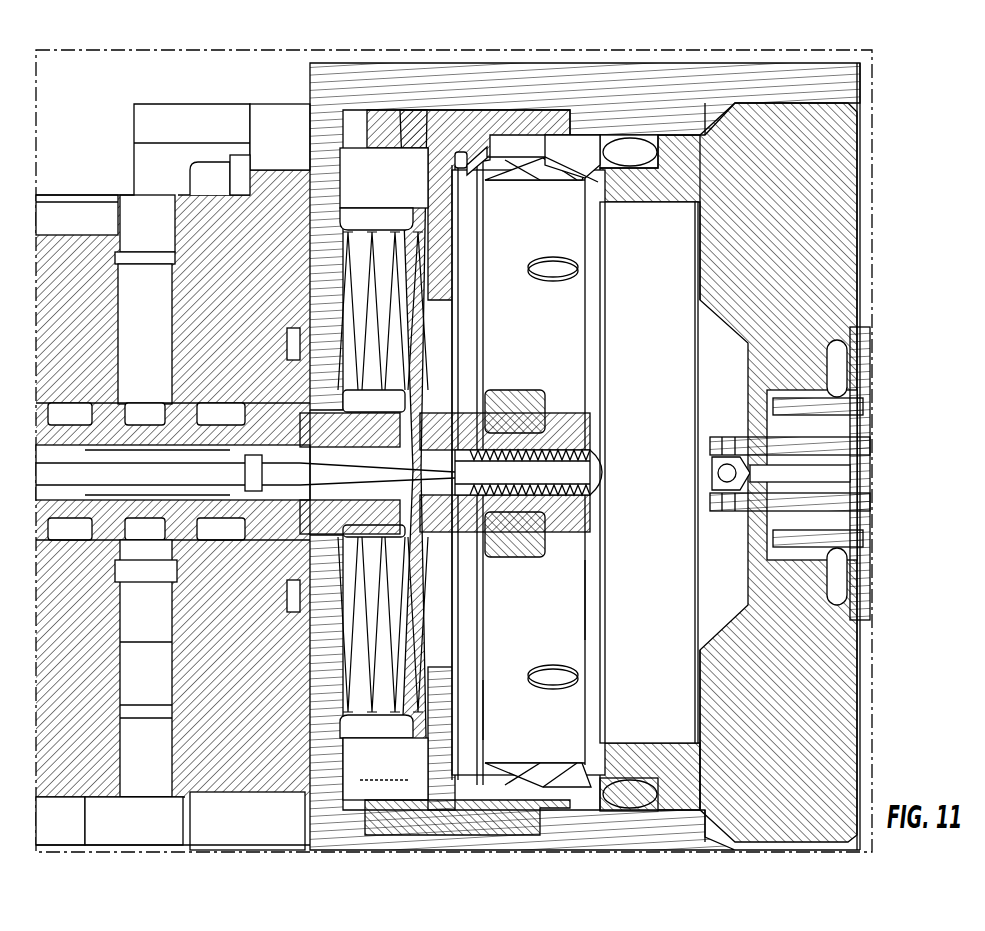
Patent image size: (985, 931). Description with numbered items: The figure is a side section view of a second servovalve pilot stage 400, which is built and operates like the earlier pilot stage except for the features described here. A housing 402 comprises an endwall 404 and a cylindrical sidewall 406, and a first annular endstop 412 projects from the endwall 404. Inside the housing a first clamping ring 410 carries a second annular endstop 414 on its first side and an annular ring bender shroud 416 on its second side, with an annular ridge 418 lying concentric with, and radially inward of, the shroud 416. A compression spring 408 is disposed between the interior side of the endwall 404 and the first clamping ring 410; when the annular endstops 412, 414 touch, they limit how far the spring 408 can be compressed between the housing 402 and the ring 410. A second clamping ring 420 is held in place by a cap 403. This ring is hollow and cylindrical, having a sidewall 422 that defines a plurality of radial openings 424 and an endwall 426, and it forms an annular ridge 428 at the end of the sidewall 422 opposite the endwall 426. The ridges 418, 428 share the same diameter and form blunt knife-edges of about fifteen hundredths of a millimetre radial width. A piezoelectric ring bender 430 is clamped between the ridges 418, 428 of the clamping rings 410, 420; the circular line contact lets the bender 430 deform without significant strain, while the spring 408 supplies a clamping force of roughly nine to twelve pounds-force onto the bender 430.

The second servovalve pilot stage 400 is at (890, 124).
The housing 402 is at (323, 70).
The cap 403 is at (763, 229).
The endwall 404 is at (313, 278).
The cylindrical sidewall 406 is at (640, 114).
The compression spring 408 is at (371, 222).
The first clamping ring 410 is at (437, 758).
The first annular endstop 412 is at (348, 218).
The second annular endstop 414 is at (420, 215).
The annular ring bender shroud 416 is at (470, 168).
The annular ridge 418 is at (462, 160).
The second clamping ring 420 is at (510, 616).
The sidewall 422 is at (572, 148).
The radial openings 424 is at (565, 676).
The endwall 426 is at (588, 600).
The annular ridge 428 is at (530, 156).
The ring bender 430 is at (473, 710).